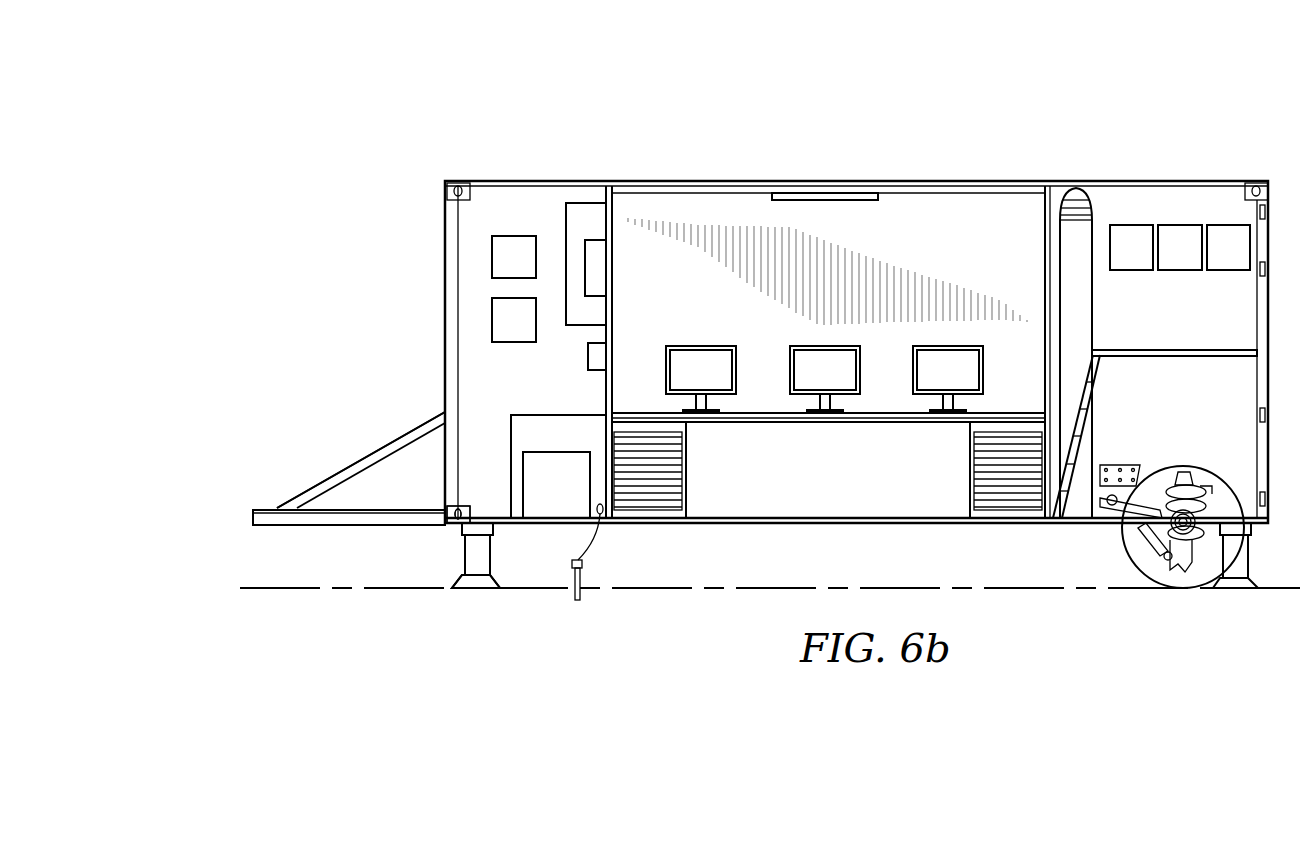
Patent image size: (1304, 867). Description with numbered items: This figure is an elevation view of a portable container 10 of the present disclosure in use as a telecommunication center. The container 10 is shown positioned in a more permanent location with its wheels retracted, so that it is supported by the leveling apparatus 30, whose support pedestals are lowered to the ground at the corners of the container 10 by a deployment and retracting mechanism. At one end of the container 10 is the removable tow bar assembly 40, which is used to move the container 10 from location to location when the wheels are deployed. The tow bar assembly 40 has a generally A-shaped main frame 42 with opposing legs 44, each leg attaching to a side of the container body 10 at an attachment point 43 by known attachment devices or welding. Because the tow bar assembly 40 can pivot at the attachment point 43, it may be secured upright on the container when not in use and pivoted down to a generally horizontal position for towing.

The container 10 is at (1190, 130).
The leveling apparatus 30 is at (468, 596).
The tow bar assembly 40 is at (236, 516).
The main frame 42 is at (310, 480).
The attachment points 43 is at (455, 527).
The legs 44 is at (394, 440).